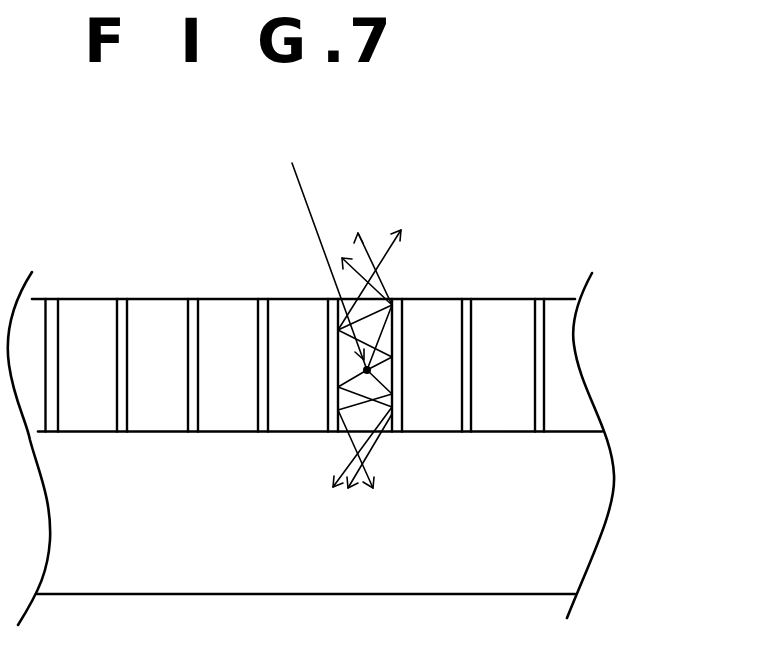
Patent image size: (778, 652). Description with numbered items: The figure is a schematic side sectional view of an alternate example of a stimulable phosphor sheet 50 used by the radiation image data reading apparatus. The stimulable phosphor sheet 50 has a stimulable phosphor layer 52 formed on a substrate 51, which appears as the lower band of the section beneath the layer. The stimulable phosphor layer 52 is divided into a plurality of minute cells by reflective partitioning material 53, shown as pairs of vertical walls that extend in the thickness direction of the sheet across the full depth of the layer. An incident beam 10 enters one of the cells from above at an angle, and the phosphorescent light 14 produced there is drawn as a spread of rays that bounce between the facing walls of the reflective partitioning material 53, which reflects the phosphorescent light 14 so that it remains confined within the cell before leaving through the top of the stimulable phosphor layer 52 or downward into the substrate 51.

The incident light beam 10 is at (307, 210).
The phosphorescent light 14 is at (383, 262).
The stimulable phosphor sheet 50 is at (520, 172).
The substrate 51 is at (577, 522).
The stimulable phosphor layer 52 is at (567, 393).
The reflective partitioning material 53 is at (537, 340).